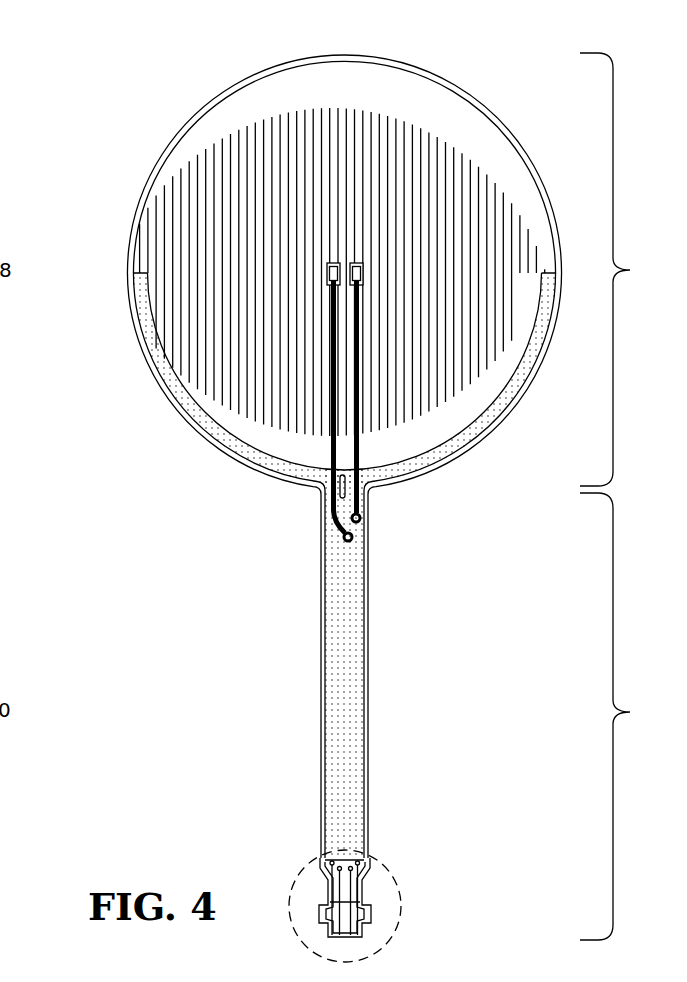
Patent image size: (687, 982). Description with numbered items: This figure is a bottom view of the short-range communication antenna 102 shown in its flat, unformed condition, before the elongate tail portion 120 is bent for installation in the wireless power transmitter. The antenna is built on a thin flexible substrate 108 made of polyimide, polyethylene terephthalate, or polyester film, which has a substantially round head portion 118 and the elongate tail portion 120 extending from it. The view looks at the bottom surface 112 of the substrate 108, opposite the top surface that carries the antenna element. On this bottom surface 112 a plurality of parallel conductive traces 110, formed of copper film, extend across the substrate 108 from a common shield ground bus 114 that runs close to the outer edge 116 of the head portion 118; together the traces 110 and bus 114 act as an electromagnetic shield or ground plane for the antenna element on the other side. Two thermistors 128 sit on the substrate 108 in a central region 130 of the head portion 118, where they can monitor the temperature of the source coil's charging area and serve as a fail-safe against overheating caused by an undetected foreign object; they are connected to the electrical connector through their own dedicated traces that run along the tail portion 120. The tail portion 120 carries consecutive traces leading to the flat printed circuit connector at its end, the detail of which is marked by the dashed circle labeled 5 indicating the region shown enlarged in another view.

The short-range communication antenna 102 is at (157, 87).
The flexible substrate 108 is at (447, 476).
The parallel conductive traces 110 is at (298, 230).
The bottom surface 112 is at (364, 139).
The common shield ground bus 114 is at (164, 368).
The outer edge 116 is at (131, 237).
The head portion 118 is at (140, 465).
The elongate tail portion 120 is at (238, 675).
The thermistors 128 is at (363, 275).
The central region 130 is at (343, 252).
The detail region shown in FIG. 5 is at (395, 862).